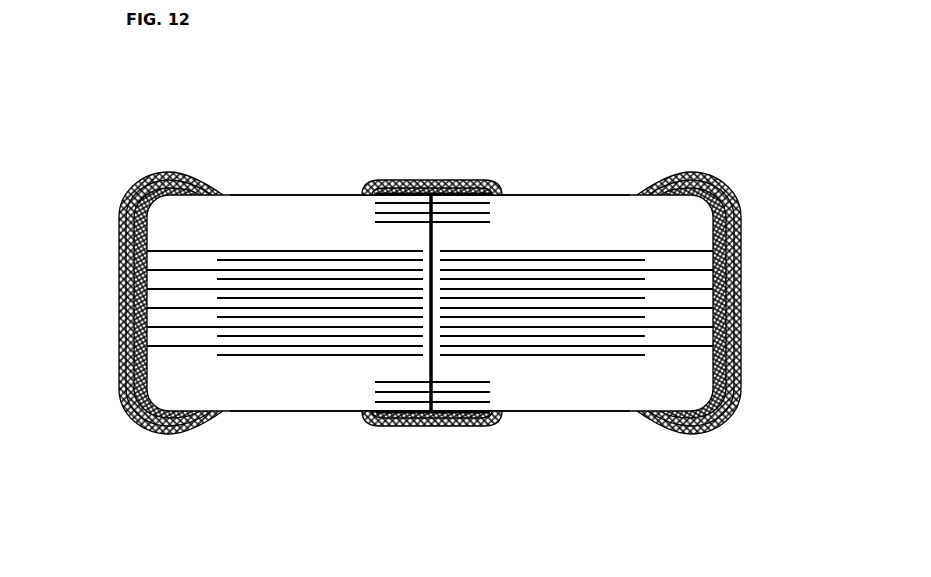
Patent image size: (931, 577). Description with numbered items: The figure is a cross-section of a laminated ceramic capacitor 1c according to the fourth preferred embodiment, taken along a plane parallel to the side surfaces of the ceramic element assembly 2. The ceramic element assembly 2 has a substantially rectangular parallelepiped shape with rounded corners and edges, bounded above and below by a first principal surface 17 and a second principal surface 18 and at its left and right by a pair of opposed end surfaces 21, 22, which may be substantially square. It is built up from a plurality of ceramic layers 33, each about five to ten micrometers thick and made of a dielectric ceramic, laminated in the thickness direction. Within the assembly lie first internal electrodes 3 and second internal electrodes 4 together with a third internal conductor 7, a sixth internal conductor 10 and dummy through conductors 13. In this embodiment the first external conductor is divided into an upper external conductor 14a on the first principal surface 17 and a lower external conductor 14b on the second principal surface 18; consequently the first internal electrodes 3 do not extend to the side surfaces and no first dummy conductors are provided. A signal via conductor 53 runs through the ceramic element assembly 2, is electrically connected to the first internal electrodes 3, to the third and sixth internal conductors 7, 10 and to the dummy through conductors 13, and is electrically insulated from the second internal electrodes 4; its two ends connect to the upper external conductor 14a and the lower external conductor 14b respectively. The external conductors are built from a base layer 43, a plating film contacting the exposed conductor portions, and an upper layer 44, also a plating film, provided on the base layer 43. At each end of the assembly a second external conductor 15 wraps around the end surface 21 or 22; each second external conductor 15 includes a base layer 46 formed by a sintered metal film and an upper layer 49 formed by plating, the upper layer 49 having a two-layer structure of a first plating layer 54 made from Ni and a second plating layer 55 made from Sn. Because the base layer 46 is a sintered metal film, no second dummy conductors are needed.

The laminated ceramic capacitor 1c is at (247, 57).
The ceramic element assembly 2 is at (590, 188).
The first internal electrodes 3 is at (576, 338).
The second internal electrodes 4 is at (663, 345).
The third internal conductor 7 is at (456, 194).
The sixth internal conductor 10 is at (394, 426).
The dummy through conductors 13 is at (476, 203).
The upper external conductor 14a is at (409, 140).
The lower external conductor 14b is at (437, 432).
The second external conductor 15 is at (393, 282).
The first principal surface 17 is at (268, 195).
The second principal surface 18 is at (290, 413).
The end surface 21 is at (718, 276).
The end surface 22 is at (140, 275).
The ceramic layers 33 is at (257, 340).
The base layer 43 is at (411, 188).
The upper layer 44 is at (431, 187).
The base layer 46 is at (135, 301).
The upper layer 49 is at (134, 303).
The signal via conductor 53 is at (432, 366).
The first plating layer 54 is at (128, 330).
The second plating layer 55 is at (121, 349).